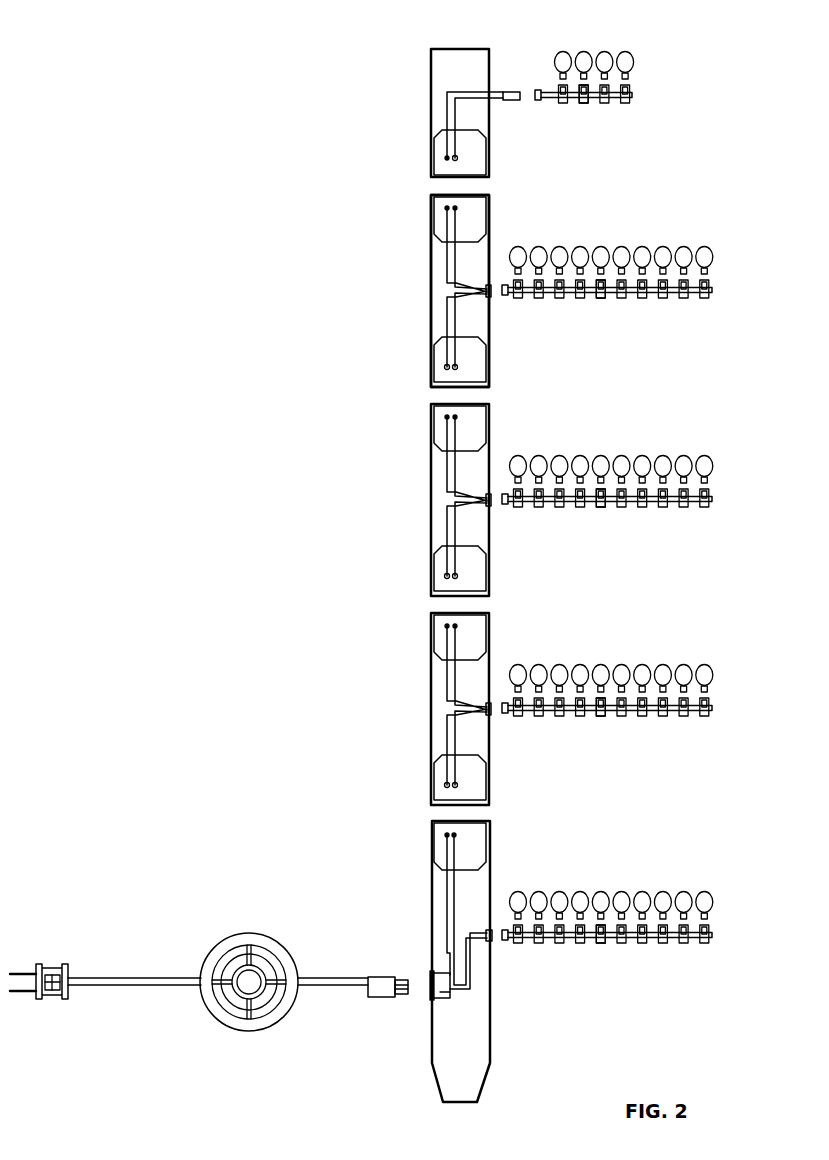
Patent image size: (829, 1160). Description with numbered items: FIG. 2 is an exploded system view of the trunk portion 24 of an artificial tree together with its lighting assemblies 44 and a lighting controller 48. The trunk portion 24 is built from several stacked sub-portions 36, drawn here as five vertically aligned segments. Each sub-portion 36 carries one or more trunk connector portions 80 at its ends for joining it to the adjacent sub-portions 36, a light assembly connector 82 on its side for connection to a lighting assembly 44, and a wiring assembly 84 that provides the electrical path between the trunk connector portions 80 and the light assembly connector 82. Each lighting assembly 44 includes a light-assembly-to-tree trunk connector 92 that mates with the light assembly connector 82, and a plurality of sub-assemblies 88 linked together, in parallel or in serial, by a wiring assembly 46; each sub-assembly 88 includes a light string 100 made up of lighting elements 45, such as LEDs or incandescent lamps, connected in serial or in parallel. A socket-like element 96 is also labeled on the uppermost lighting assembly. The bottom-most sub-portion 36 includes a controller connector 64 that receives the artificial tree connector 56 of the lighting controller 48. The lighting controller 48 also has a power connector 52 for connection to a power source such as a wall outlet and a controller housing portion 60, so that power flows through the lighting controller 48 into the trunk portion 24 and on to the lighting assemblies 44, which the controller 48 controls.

The trunk portion 24 is at (431, 288).
The sub-portion 36 is at (431, 64).
The lighting assembly 44 is at (606, 103).
The lighting element 45 is at (632, 57).
The wiring assembly 46 is at (601, 300).
The lighting controller 48 is at (233, 935).
The power connector 52 is at (58, 963).
The artificial tree connector 56 is at (380, 977).
The controller housing portion 60 is at (264, 933).
The controller connector 64 is at (440, 1000).
The trunk connector portion 80 is at (478, 168).
The light assembly connector 82 is at (510, 90).
The wiring assembly 84 is at (447, 118).
The sub-assembly 88 is at (630, 98).
The light-assembly-to-tree trunk connector 92 is at (537, 101).
The socket 96 is at (584, 103).
The light string 100 is at (628, 78).